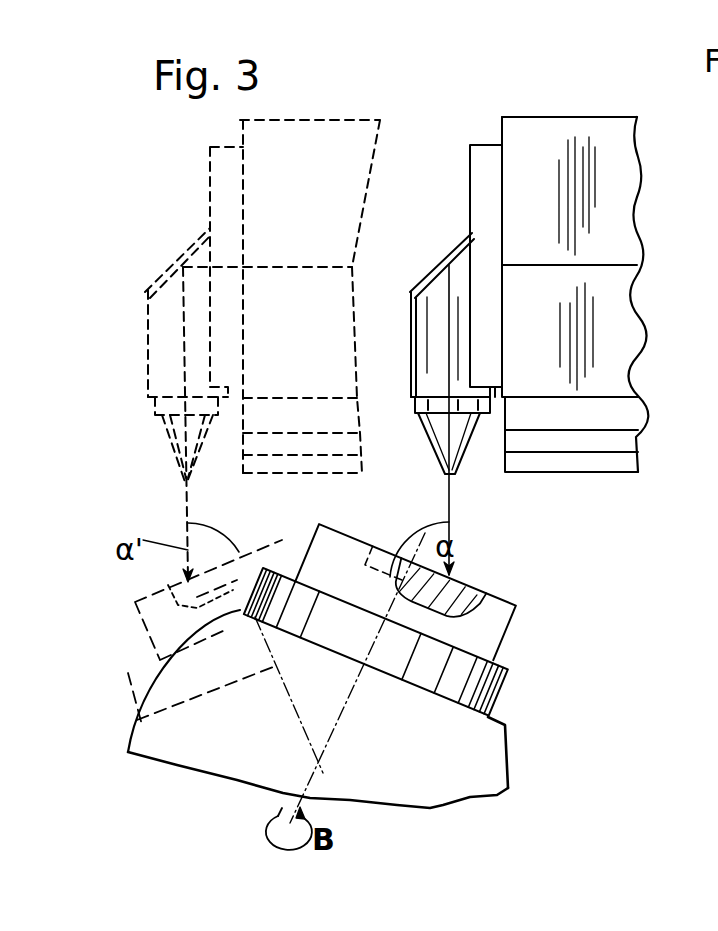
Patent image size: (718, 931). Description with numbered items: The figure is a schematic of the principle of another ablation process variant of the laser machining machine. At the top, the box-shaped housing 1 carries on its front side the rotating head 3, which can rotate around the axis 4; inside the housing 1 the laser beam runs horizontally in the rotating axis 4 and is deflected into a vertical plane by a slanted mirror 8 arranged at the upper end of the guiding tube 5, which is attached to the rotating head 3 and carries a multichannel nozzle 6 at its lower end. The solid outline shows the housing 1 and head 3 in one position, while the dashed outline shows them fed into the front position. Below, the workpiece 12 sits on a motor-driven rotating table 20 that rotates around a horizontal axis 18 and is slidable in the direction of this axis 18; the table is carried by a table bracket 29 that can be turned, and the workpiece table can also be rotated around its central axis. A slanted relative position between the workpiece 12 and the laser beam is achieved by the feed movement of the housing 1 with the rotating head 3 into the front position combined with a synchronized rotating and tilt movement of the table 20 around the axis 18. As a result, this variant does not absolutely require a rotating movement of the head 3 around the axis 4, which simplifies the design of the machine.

The box-shaped housing 1 is at (582, 140).
The rotating head 3 is at (485, 165).
The axis 4 is at (613, 265).
The guiding tube 5 is at (437, 347).
The multichannel nozzle 6 is at (473, 435).
The slanted mirror 8 is at (435, 270).
The workpiece 12 is at (485, 625).
The horizontal axis 18 is at (320, 767).
The rotating table 20 is at (482, 682).
The table bracket 29 is at (487, 753).